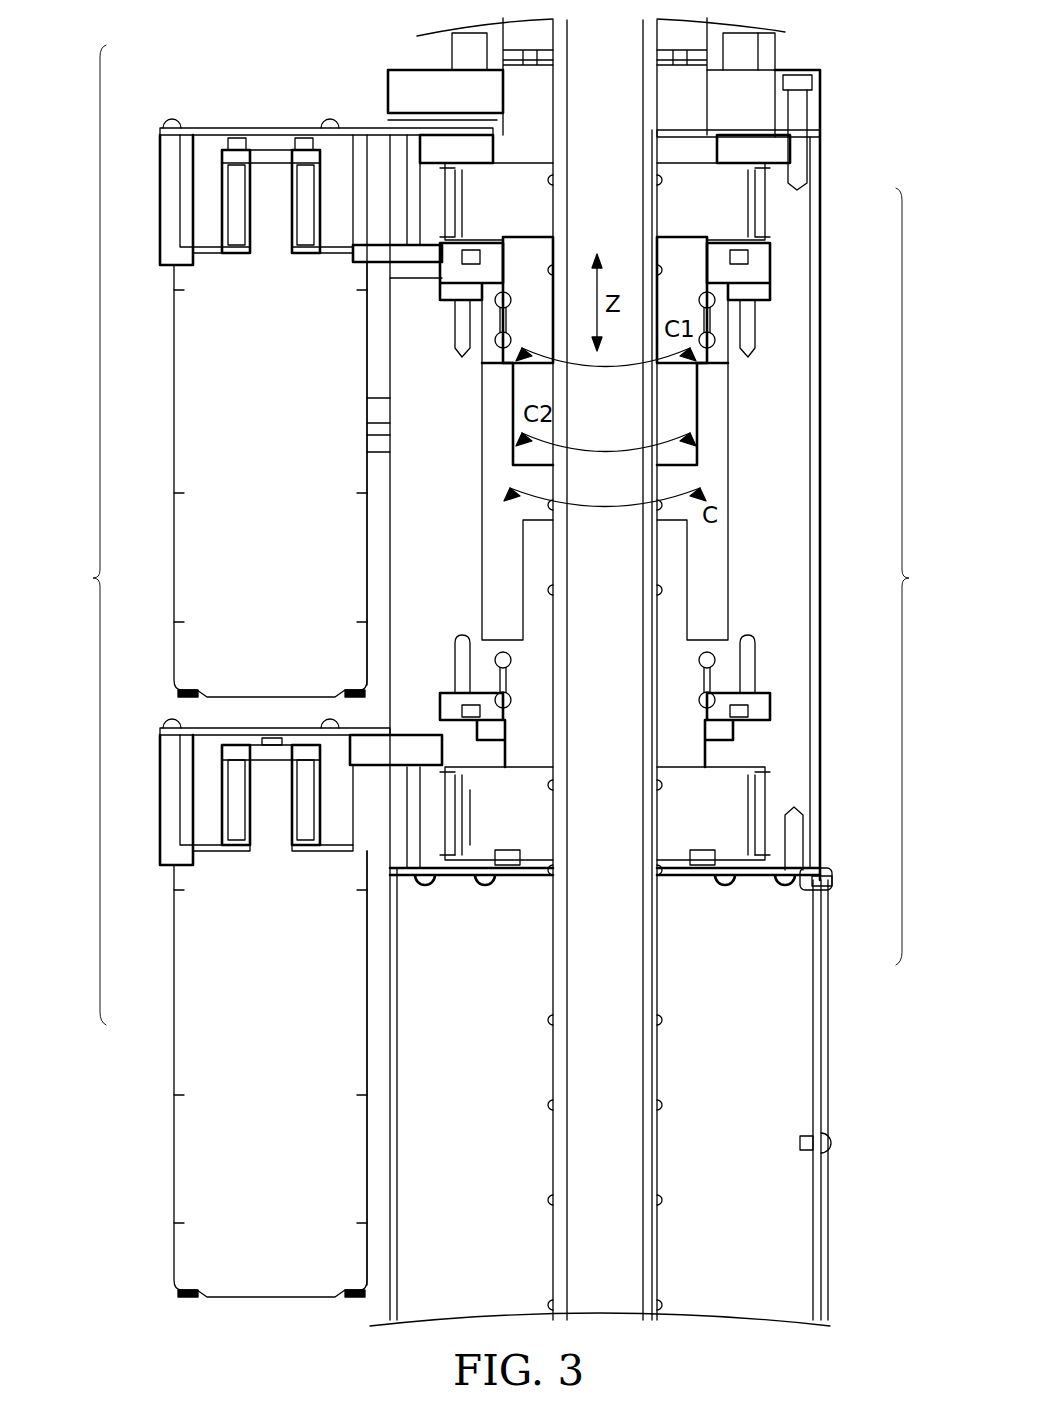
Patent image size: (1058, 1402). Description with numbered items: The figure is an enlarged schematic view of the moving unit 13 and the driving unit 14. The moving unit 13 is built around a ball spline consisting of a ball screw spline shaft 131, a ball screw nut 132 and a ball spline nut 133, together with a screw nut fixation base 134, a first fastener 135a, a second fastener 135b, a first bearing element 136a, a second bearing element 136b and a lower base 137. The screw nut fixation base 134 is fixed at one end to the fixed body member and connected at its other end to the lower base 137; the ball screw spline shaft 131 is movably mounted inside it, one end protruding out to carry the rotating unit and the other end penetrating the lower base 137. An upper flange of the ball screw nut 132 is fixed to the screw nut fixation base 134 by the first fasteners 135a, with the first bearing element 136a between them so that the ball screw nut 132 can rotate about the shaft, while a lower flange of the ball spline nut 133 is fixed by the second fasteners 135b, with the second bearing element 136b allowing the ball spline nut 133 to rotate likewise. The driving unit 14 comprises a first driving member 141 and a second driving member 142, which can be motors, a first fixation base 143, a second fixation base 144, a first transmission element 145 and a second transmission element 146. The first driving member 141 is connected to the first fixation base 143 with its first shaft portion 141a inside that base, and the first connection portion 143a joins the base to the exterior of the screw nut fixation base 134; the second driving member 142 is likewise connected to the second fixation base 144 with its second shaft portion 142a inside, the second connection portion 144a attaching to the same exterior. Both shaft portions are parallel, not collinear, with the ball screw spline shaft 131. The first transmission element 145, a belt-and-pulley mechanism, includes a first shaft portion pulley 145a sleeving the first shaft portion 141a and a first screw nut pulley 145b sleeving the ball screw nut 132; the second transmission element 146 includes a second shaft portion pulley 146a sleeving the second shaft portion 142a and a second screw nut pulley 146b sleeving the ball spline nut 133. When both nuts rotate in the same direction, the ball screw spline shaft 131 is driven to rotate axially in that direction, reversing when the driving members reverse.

The moving unit 13 is at (919, 576).
The driving unit 14 is at (83, 535).
The ball screw spline shaft 131 is at (648, 265).
The ball screw nut 132 is at (690, 410).
The ball spline nut 133 is at (682, 634).
The screw nut fixation base 134 is at (812, 212).
The first fastener 135a is at (750, 340).
The second fastener 135b is at (752, 660).
The first bearing element 136a is at (714, 346).
The second bearing element 136b is at (714, 700).
The lower base 137 is at (828, 1016).
The first driving member 141 is at (210, 455).
The first shaft portion 141a is at (277, 233).
The second driving member 142 is at (210, 993).
The second shaft portion 142a is at (275, 815).
The first fixation base 143 is at (168, 210).
The first connection portion 143a is at (383, 263).
The second fixation base 144 is at (168, 818).
The second connection portion 144a is at (400, 753).
The first transmission element 145 is at (177, 45).
The first shaft portion pulley 145a is at (235, 190).
The first screw nut pulley 145b is at (470, 198).
The second transmission element 146 is at (540, 945).
The second shaft portion pulley 146a is at (437, 822).
The second screw nut pulley 146b is at (503, 822).